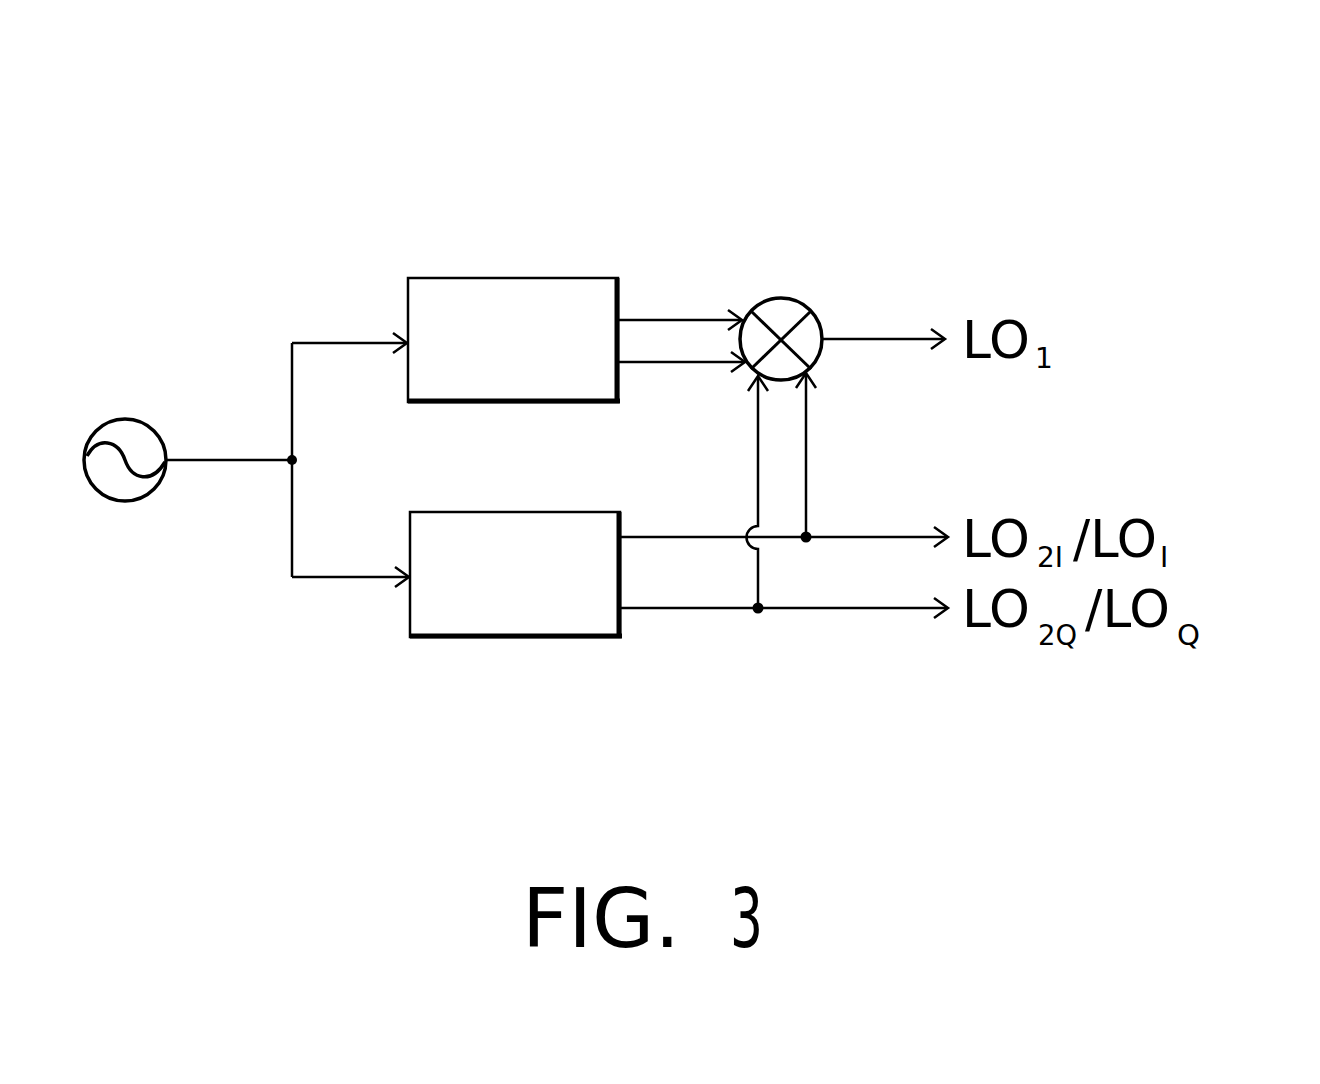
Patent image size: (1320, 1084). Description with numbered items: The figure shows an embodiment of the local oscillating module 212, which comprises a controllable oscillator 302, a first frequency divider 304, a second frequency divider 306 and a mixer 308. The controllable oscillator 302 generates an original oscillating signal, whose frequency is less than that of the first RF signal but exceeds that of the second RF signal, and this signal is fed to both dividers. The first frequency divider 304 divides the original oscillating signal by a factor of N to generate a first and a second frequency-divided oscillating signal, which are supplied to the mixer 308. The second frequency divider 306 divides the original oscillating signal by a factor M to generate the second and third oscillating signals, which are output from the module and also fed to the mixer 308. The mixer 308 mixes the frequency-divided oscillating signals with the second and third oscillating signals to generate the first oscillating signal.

The local oscillating module 212 is at (1312, 107).
The controllable oscillator 302 is at (127, 418).
The first frequency divider 304 is at (513, 278).
The second frequency divider 306 is at (517, 512).
The mixer 308 is at (783, 297).